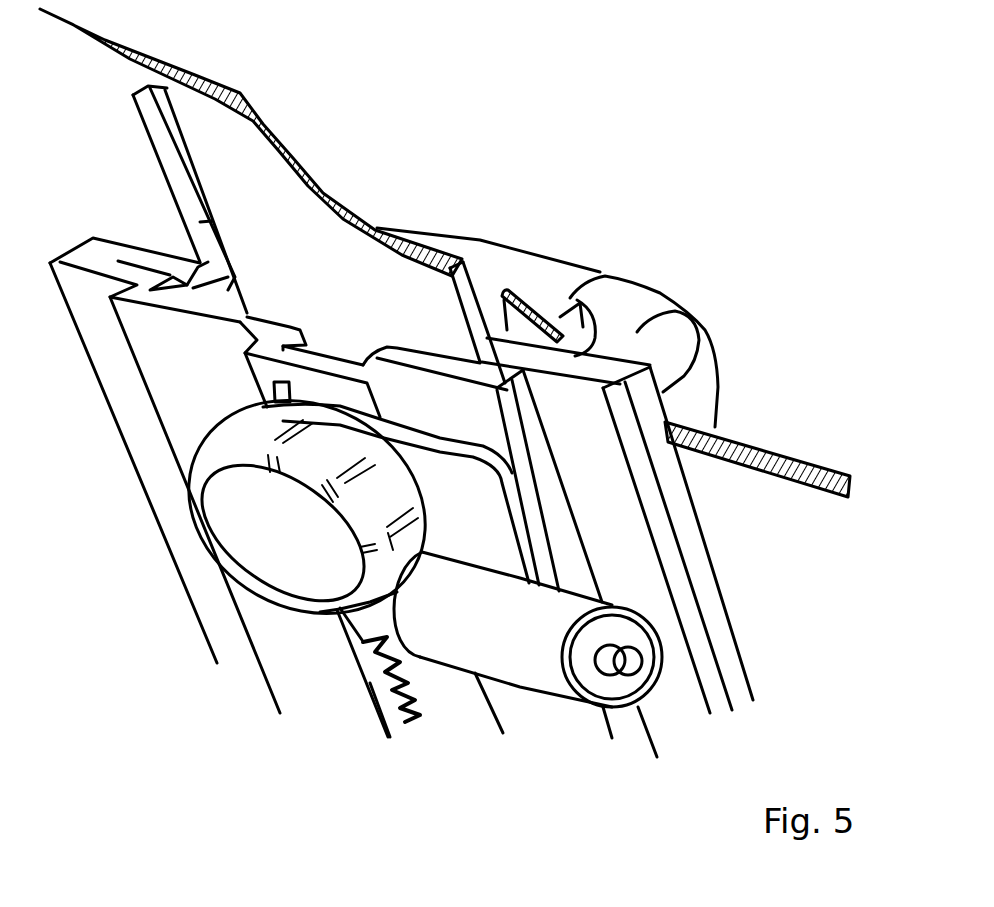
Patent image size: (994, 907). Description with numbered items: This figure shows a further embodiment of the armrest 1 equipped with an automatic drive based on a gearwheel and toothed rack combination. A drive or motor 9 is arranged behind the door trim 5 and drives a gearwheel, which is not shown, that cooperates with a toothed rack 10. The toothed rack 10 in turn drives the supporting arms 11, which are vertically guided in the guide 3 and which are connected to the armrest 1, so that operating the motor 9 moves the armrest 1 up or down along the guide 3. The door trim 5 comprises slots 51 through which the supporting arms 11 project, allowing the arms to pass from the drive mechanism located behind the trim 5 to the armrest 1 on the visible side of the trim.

The armrest 1 is at (683, 312).
The guide 3 is at (615, 510).
The door trim 5 is at (302, 174).
The drive or motor 9 is at (267, 540).
The toothed rack 10 is at (365, 678).
The supporting arms 11 is at (567, 308).
The slots 51 is at (167, 168).